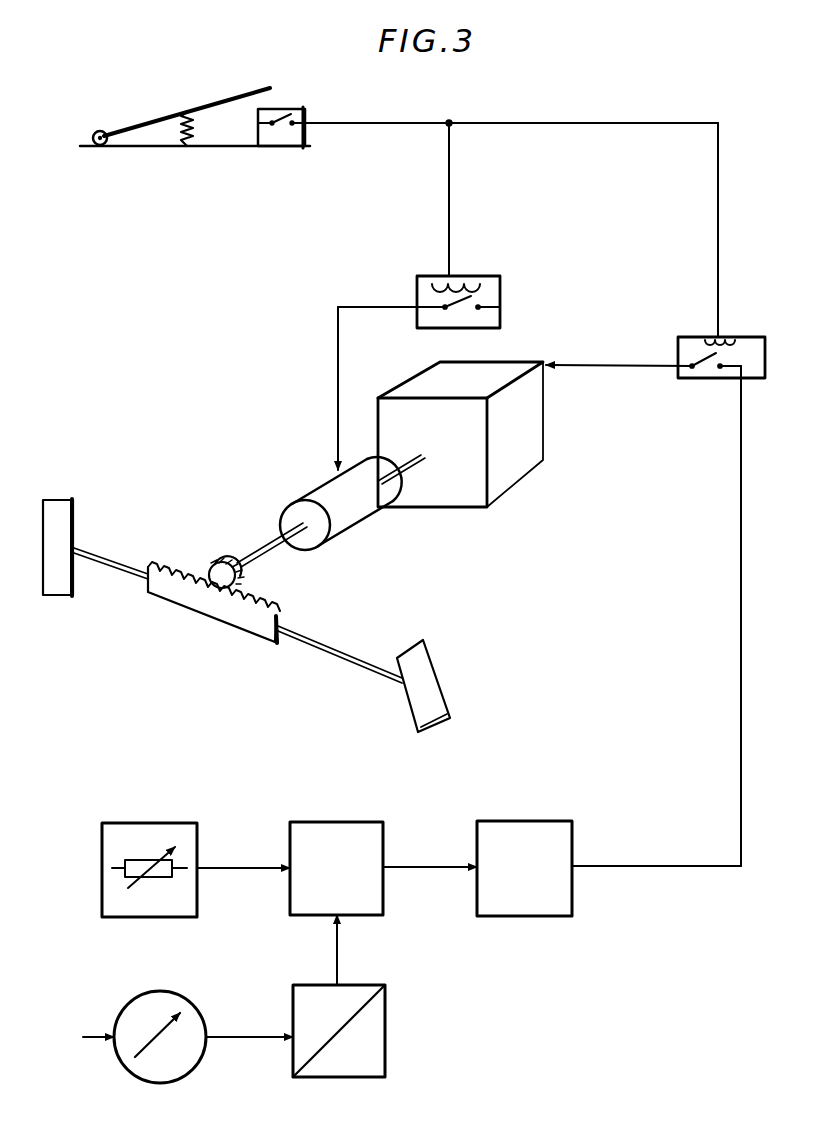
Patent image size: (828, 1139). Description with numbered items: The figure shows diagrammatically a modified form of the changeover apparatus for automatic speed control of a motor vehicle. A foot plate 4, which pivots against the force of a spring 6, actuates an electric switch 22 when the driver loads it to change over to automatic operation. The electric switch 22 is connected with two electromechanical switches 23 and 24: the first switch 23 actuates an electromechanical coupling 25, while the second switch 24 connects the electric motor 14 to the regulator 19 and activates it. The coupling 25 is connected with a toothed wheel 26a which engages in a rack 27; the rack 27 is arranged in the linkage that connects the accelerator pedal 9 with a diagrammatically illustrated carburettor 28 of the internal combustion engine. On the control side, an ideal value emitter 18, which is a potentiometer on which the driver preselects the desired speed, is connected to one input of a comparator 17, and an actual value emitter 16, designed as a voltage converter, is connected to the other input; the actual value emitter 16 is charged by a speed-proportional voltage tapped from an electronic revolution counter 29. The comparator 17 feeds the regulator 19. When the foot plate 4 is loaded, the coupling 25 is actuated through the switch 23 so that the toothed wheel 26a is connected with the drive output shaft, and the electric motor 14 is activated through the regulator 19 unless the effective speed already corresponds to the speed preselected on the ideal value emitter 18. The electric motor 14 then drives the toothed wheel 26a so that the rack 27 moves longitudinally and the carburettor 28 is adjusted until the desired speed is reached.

The foot plate 4 is at (213, 104).
The spring 6 is at (197, 132).
The electric switch 22 is at (306, 108).
The electromechanical switch 23 is at (502, 298).
The electromechanical switch 24 is at (680, 354).
The electric motor 14 is at (543, 460).
The electromechanical coupling 25 is at (388, 492).
The toothed wheel 26a is at (245, 587).
The carburettor 28 is at (76, 522).
The rack 27 is at (277, 643).
The accelerator pedal 9 is at (433, 668).
The ideal value emitter 18 is at (147, 823).
The comparator 17 is at (330, 822).
The regulator 19 is at (535, 821).
The electronic revolution counter 29 is at (180, 992).
The actual value emitter 16 is at (385, 1020).